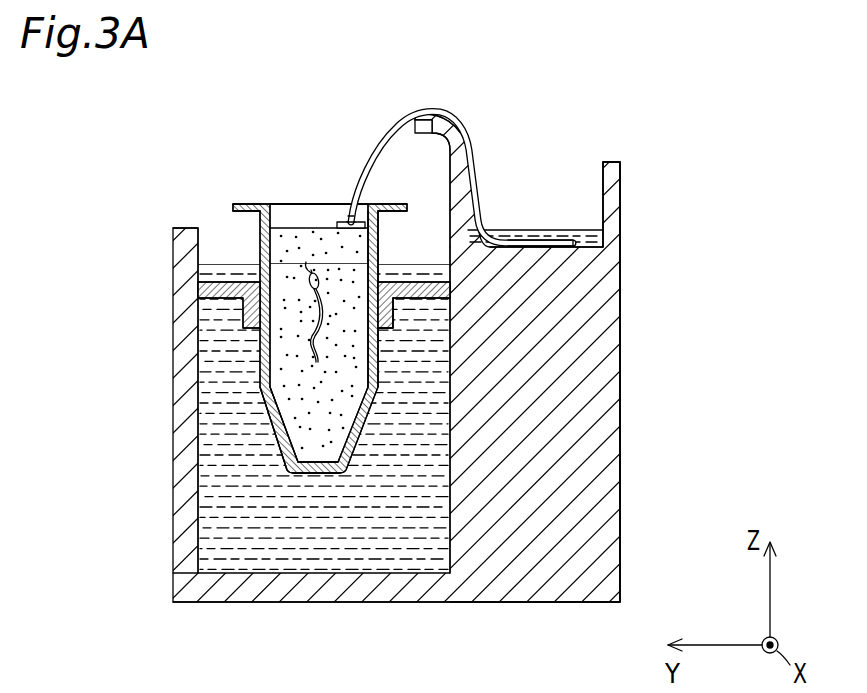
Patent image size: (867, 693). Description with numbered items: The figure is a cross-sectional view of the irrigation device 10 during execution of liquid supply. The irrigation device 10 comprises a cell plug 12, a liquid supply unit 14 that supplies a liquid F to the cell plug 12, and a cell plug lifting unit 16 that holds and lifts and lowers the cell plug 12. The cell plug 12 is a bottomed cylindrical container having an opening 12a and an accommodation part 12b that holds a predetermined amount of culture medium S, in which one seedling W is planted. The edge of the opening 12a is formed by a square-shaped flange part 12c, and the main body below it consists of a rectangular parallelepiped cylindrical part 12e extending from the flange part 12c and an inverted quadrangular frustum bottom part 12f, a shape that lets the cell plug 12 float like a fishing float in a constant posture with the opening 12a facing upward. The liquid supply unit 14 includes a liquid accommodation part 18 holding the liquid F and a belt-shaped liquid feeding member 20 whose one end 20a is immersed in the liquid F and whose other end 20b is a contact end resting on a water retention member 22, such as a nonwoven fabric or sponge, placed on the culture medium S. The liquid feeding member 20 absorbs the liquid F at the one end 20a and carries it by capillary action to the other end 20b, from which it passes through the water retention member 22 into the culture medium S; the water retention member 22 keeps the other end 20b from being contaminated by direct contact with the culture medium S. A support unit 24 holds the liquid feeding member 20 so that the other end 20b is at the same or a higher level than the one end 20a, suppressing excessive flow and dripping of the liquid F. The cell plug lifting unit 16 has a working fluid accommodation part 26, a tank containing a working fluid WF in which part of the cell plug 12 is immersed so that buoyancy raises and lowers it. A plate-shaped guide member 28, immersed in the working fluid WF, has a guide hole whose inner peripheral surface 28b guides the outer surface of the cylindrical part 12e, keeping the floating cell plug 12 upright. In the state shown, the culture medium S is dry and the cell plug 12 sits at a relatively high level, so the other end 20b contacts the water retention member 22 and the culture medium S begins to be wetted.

The irrigation device 10 is at (708, 196).
The cell plug 12 is at (321, 315).
The opening 12a is at (283, 207).
The accommodation part 12b is at (270, 431).
The flange part 12c is at (247, 204).
The cylindrical part 12e is at (378, 365).
The bottom part 12f is at (283, 453).
The liquid supply unit 14 is at (496, 146).
The cell plug lifting unit 16 is at (189, 197).
The liquid accommodation part 18 is at (604, 205).
The liquid feeding member 20 is at (455, 164).
The one end 20a is at (560, 242).
The other end 20b is at (347, 215).
The water retention member 22 is at (338, 218).
The support unit 24 is at (447, 140).
The working fluid accommodation part 26 is at (285, 416).
The guide member 28 is at (324, 336).
The inner peripheral surface 28b is at (373, 322).
The seedling W is at (323, 307).
The culture medium S is at (326, 448).
The working fluid WF is at (336, 552).
The liquid F is at (480, 243).